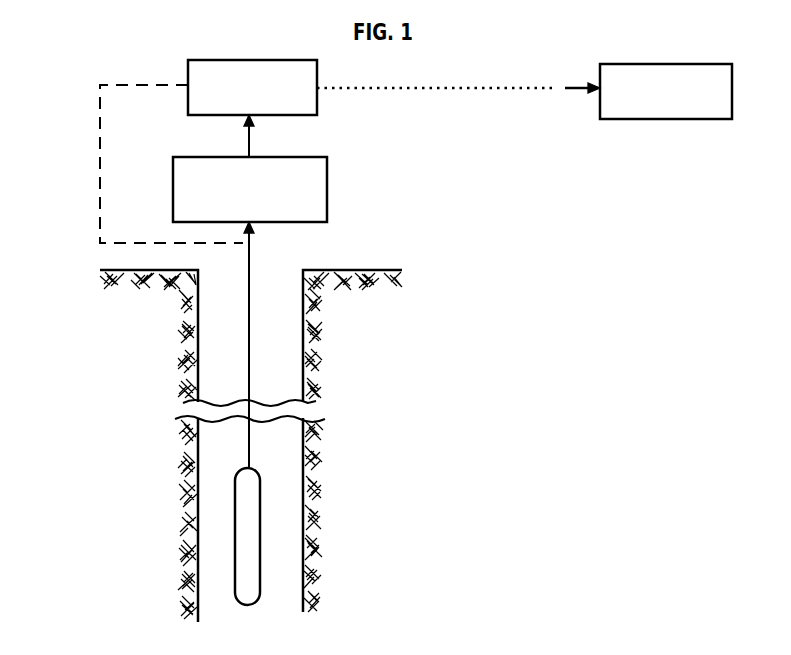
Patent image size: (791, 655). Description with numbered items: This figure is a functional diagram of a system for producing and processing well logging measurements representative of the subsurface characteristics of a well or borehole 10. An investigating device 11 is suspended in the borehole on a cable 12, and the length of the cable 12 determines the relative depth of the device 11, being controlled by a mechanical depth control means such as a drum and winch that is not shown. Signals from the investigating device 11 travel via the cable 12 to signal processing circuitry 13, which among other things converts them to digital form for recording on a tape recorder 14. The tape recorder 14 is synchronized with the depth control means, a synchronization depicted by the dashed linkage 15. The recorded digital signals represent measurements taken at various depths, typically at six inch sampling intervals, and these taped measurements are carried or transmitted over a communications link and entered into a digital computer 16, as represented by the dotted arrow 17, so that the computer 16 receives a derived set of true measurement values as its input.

The borehole 10 is at (293, 330).
The investigating device 11 is at (248, 523).
The cable 12 is at (248, 290).
The signal processing circuitry 13 is at (327, 193).
The tape recorder 14 is at (188, 95).
The dashed linkage 15 is at (100, 163).
The digital computer 16 is at (640, 113).
The dotted arrow 17 is at (448, 87).